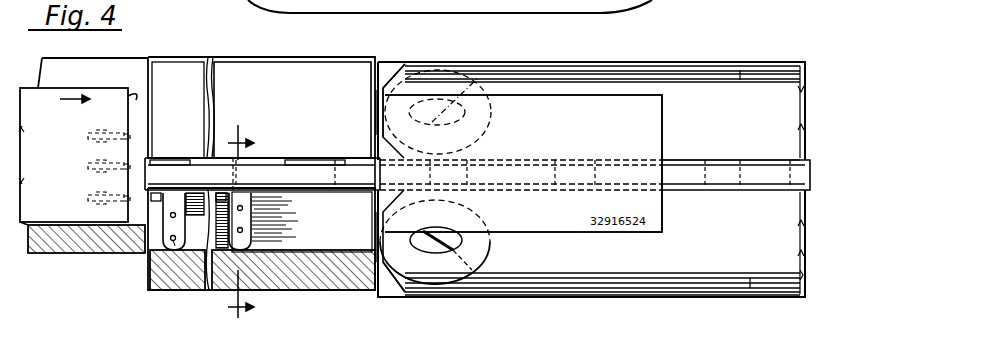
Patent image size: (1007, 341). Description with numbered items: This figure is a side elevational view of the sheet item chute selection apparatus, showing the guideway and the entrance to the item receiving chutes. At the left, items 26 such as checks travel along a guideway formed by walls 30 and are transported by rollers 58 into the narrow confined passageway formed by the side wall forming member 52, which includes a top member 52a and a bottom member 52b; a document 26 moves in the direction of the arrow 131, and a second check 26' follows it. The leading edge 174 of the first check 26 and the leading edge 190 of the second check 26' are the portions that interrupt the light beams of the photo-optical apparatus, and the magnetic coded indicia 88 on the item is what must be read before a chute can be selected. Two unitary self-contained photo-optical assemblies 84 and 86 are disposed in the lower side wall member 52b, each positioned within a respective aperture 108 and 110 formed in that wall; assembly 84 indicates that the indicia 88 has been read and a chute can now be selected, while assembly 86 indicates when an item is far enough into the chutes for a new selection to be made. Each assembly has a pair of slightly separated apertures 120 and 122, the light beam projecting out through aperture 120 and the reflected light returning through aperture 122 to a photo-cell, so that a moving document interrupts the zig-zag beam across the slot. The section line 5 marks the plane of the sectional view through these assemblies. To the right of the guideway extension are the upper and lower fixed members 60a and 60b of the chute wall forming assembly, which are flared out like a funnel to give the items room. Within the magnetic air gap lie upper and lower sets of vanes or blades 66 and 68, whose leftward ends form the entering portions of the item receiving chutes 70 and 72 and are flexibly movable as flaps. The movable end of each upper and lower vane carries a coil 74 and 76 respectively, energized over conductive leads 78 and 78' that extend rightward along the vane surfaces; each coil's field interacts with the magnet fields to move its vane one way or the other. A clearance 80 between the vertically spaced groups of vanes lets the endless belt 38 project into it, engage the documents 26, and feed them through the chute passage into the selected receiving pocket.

The guideway walls 30 is at (90, 70).
The leading edge of second check 190 is at (137, 96).
The arrow 131 is at (66, 99).
The rollers 58 is at (88, 196).
The second check 26' is at (73, 155).
The aperture 108 is at (170, 244).
The photo-optical assembly 84 is at (168, 253).
The aperture 110 is at (232, 250).
The side wall forming member 52 is at (230, 66).
The top side wall member 52a is at (320, 100).
The lower side wall member 52b is at (348, 218).
The aperture 120 is at (243, 208).
The aperture 122 is at (243, 230).
The photo-optical assembly 86 is at (270, 240).
The section line 5 is at (248, 222).
The upper fixed chute wall member 60a is at (398, 70).
The lower fixed chute wall member 60b is at (391, 285).
The upper set of vanes 66 is at (455, 66).
The item receiving chute 70 is at (682, 92).
The conductive lead 78 is at (749, 60).
The conductive lead 78' is at (753, 300).
The leading edge of first check 174 is at (662, 126).
The item 26 is at (523, 163).
The coil 74 is at (455, 88).
The coil 76 is at (480, 248).
The lower set of vanes 68 is at (462, 294).
The item receiving chute 72 is at (656, 280).
The clearance 80 is at (715, 158).
The magnetic coded indicia 88 is at (648, 232).
The endless belt 38 is at (733, 190).